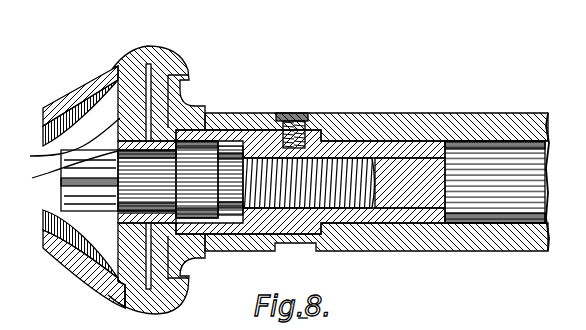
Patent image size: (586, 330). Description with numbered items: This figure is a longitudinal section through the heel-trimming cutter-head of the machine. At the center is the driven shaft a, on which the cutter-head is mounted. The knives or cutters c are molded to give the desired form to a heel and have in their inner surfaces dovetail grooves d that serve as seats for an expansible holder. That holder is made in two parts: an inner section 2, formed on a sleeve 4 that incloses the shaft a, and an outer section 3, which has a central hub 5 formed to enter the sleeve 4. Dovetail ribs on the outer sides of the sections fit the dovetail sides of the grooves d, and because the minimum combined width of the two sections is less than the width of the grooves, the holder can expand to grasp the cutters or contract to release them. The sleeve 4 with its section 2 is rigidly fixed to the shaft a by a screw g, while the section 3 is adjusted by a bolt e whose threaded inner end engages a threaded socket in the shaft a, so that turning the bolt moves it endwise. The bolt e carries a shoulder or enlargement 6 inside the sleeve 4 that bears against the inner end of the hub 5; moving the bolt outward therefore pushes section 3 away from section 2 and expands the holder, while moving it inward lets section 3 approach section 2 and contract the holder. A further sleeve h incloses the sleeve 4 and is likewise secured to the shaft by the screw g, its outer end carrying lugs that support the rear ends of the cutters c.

The dovetail grooves d is at (143, 60).
The inner section 2 is at (168, 96).
The knives or cutters c is at (72, 80).
The outer section 3 is at (65, 144).
The central hub 5 is at (97, 180).
The shoulder or enlargement 6 is at (180, 148).
The sleeve 4 is at (232, 132).
The sleeve h is at (220, 243).
The shaft a is at (540, 166).
The screw g is at (286, 110).
The bolt e is at (325, 150).